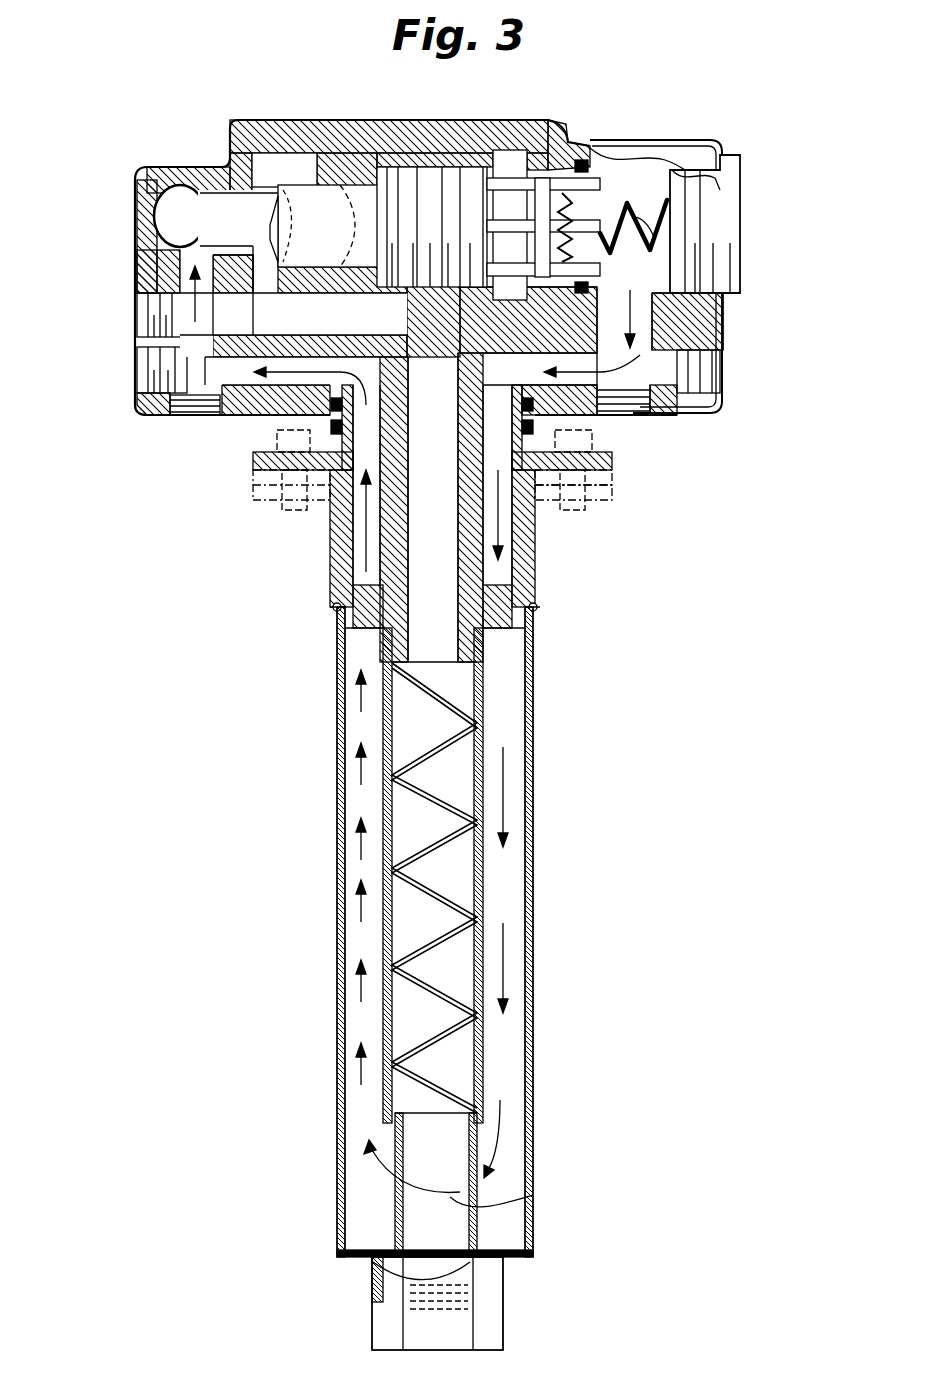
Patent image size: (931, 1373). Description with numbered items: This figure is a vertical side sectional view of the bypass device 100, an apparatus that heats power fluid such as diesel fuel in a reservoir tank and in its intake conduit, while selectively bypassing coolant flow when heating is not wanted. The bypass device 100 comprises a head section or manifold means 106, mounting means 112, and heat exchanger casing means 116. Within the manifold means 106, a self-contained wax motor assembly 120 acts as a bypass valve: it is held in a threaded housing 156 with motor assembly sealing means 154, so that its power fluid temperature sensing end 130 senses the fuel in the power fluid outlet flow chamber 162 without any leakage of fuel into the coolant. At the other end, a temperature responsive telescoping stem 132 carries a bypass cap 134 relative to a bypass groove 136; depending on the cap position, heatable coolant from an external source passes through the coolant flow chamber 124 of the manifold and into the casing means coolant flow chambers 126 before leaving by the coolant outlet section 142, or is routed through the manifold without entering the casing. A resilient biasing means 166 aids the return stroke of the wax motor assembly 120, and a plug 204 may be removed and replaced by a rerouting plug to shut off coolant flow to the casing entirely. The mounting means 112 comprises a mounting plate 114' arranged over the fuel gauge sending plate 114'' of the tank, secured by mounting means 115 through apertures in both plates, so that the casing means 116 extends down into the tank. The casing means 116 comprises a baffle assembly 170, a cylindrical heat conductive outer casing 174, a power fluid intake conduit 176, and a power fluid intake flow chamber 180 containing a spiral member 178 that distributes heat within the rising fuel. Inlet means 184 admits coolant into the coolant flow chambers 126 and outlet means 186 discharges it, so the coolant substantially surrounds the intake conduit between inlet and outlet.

The bypass device 100 is at (672, 581).
The manifold means 106 is at (137, 172).
The mounting means 112 is at (610, 454).
The mounting plate 114' is at (485, 487).
The fuel gauge sending plate 114'' is at (627, 515).
The mounting means 115 is at (287, 512).
The heat exchanger casing means 116 is at (532, 821).
The self-contained wax motor assembly 120 is at (300, 210).
The coolant flow chamber 124 is at (280, 222).
The casing means coolant flow chambers 126 is at (359, 731).
The power fluid temperature sensing end 130 is at (272, 233).
The telescoping stem 132 is at (548, 212).
The bypass cap 134 is at (668, 142).
The bypass groove 136 is at (518, 215).
The coolant outlet section 142 is at (150, 200).
The motor assembly sealing means 154 is at (407, 140).
The threaded housing 156 is at (436, 150).
The power fluid outlet flow chamber 162 is at (273, 233).
The resilient biasing means 166 is at (637, 222).
The baffle assembly 170 is at (537, 610).
The outer casing 174 is at (343, 1132).
The power fluid intake conduit 176 is at (383, 865).
The spiral member 178 is at (430, 987).
The power fluid intake flow chamber 180 is at (457, 958).
The inlet means 184 is at (509, 633).
The outlet means 186 is at (357, 638).
The plug 204 is at (733, 232).